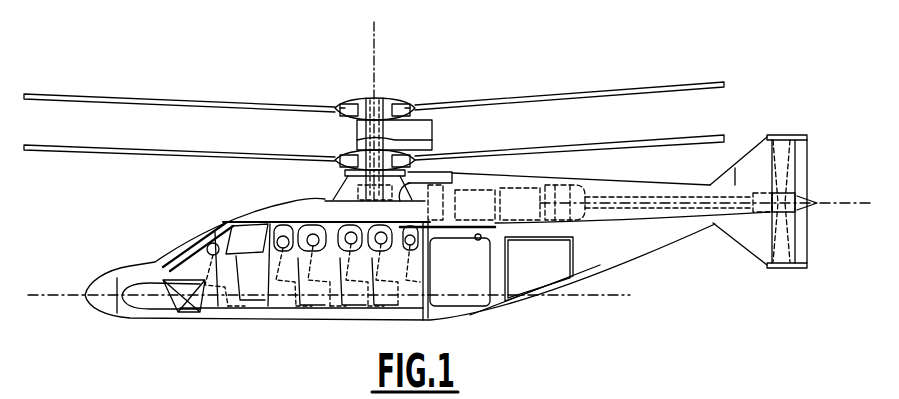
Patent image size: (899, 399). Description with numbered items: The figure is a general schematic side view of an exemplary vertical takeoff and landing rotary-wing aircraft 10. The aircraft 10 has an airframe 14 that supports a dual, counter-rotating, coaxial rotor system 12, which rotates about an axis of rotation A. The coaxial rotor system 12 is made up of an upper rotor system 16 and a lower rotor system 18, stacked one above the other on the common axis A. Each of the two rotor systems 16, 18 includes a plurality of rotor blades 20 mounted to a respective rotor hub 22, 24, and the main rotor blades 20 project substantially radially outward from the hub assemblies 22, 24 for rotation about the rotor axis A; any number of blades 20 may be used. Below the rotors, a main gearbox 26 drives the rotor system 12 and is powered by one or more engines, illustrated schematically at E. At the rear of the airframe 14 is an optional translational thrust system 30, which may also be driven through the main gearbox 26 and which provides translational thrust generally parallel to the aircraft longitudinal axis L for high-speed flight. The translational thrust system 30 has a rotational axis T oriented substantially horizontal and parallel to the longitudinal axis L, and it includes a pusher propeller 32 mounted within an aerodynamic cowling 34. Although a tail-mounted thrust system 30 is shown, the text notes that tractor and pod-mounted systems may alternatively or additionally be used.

The rotary-wing aircraft 10 is at (457, 173).
The dual, counter-rotating, coaxial rotor system 12 is at (428, 93).
The airframe 14 is at (250, 210).
The upper rotor system 16 is at (360, 95).
The lower rotor system 18 is at (320, 150).
The rotor blades 20 is at (533, 152).
The rotor hub 22 is at (392, 98).
The rotor hub 24 is at (422, 142).
The main gearbox 26 is at (335, 193).
The translational thrust system 30 is at (831, 190).
The pusher propeller 32 is at (790, 178).
The aerodynamic cowling 34 is at (785, 137).
The axis of rotation A is at (374, 42).
The engines E is at (537, 190).
The rotational axis T is at (838, 204).
The aircraft longitudinal axis L is at (560, 294).